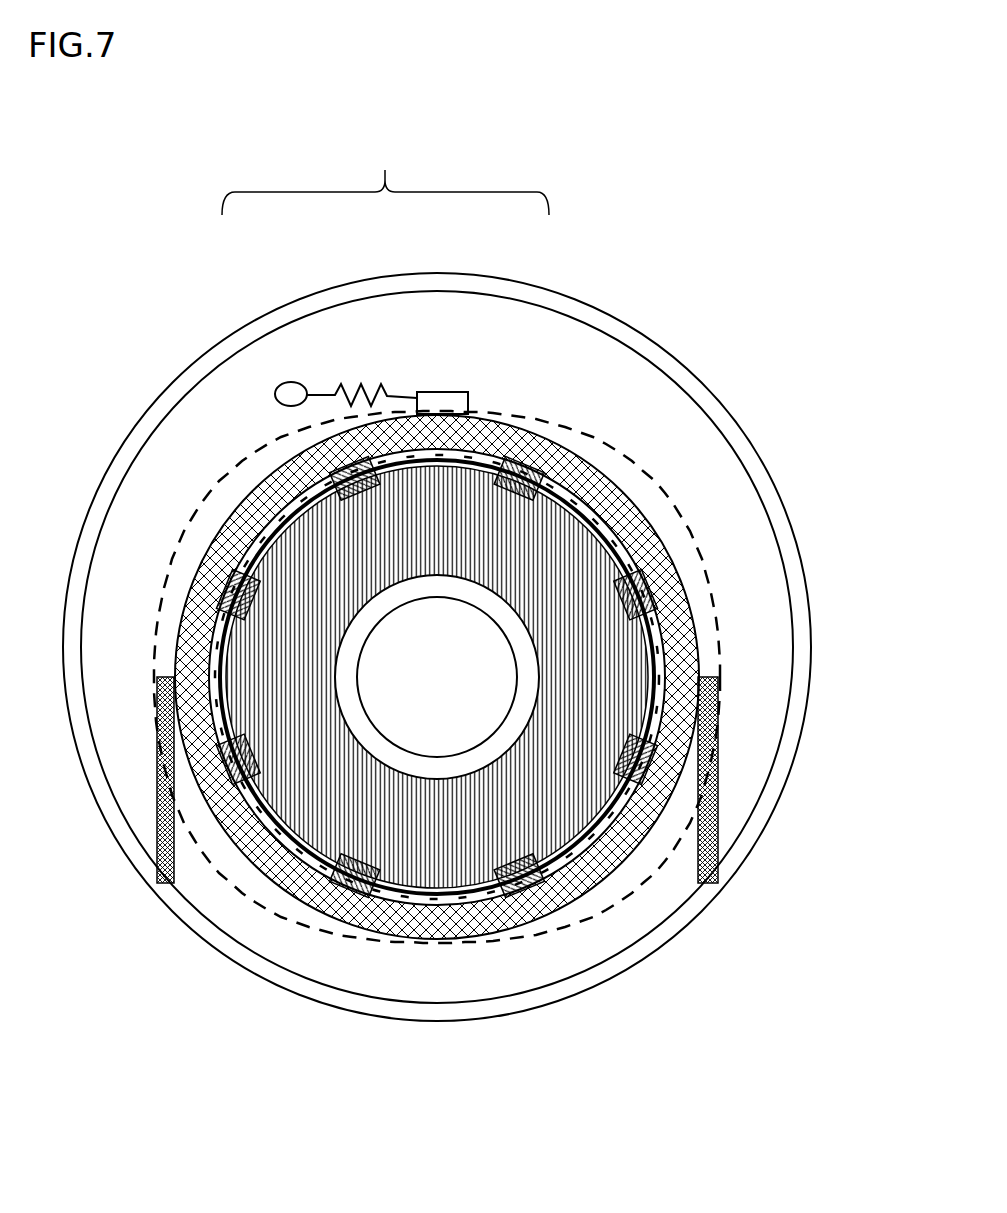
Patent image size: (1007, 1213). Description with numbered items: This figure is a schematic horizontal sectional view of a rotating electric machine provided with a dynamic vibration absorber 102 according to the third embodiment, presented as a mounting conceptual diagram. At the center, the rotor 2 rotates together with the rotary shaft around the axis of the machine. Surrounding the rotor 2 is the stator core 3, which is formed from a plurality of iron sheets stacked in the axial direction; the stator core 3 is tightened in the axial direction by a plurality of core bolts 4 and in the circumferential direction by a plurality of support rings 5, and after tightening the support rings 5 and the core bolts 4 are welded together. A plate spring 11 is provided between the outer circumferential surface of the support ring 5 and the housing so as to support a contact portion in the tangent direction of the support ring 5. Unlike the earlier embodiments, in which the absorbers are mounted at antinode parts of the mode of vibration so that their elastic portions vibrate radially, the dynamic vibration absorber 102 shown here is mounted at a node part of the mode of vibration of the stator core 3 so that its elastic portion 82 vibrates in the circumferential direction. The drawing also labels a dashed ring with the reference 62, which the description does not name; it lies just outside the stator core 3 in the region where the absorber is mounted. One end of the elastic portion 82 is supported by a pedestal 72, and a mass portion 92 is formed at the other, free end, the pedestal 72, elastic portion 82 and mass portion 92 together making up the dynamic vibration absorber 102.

The rotor 2 is at (350, 710).
The stator core 3 is at (503, 805).
The core bolt 4 is at (650, 583).
The support ring 5 is at (593, 457).
The plate spring 11 is at (718, 778).
The sensor ring 62 is at (473, 413).
The pedestal 72 is at (437, 393).
The elastic portion 82 is at (358, 390).
The mass portion 92 is at (292, 382).
The dynamic vibration absorber 102 is at (385, 172).